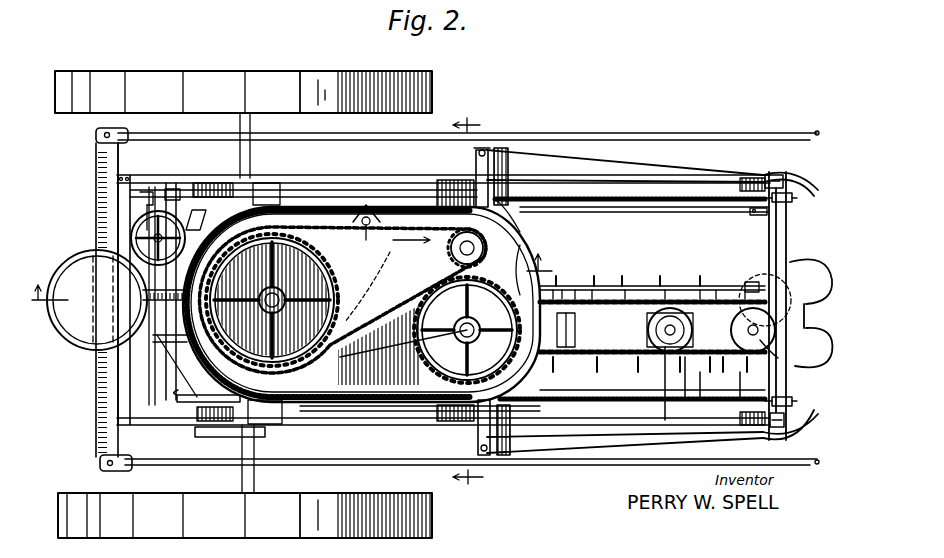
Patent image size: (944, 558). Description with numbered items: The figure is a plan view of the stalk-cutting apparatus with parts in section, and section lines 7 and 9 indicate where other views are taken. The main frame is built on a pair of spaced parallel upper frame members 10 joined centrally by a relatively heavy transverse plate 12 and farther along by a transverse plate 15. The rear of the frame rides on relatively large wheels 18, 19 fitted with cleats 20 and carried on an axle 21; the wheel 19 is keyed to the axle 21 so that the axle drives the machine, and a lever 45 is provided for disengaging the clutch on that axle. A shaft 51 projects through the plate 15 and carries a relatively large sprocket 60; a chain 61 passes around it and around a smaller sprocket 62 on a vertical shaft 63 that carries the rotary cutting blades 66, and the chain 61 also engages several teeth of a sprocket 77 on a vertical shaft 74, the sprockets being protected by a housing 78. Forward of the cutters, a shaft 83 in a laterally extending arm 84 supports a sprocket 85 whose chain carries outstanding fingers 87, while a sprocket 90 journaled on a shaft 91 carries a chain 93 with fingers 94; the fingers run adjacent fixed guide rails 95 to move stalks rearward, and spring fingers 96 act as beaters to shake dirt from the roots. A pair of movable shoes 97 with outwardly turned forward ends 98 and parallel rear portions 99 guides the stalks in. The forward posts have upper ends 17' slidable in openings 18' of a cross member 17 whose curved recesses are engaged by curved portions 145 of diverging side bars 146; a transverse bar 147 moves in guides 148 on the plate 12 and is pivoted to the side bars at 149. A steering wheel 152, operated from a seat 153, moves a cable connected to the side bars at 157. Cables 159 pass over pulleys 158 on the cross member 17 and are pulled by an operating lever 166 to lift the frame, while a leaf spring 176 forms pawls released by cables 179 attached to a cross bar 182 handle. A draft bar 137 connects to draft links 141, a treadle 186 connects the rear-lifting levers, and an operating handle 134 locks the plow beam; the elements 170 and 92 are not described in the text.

The wheel 18 is at (243, 81).
The wheel 19 is at (215, 528).
The cleats 20 is at (316, 75).
The axle 21 is at (238, 118).
The draft links 141 is at (650, 123).
The treadle 186 is at (118, 194).
The draft bar 137 is at (100, 222).
The seat 153 is at (77, 262).
The operating handle 134 is at (157, 330).
The section line 7 is at (292, 275).
The section line 9 is at (468, 306).
The transverse plate 15 is at (265, 186).
The cross bar 182 is at (142, 193).
The cable 179 is at (172, 197).
The steering wheel 152 is at (185, 258).
The lever 45 is at (170, 291).
The bar 170 is at (180, 401).
The operating lever 166 is at (208, 436).
The upper frame members 10 is at (350, 188).
The sprocket 60 is at (333, 277).
The housing 78 is at (529, 380).
The shaft 51 is at (278, 290).
The chain 61 is at (378, 318).
The vertical shaft 63 is at (456, 250).
The vertical shaft 74 is at (412, 340).
The sprocket 77 is at (417, 364).
The transverse bar 147 is at (473, 163).
The guides 148 is at (467, 188).
The transverse plate 12 is at (437, 197).
The pivotal connection 149 is at (481, 148).
The cable connection 157 is at (505, 150).
The side bars 146 is at (658, 170).
The upper ends of posts 17' is at (780, 300).
The openings 18' is at (741, 284).
The curved portions 145 is at (774, 175).
The cross member 17 is at (749, 306).
The pulleys 158 is at (789, 203).
The leaf spring 176 is at (766, 222).
The outwardly turned forward ends 98 is at (811, 265).
The shoes 97 is at (808, 292).
The rear portions of shoes 99 is at (750, 284).
The link 92 is at (777, 362).
The cable 159 is at (628, 206).
The fingers 87 is at (700, 299).
The fingers 94 is at (620, 299).
The guide rails 95 is at (646, 299).
The spring fingers 96 is at (562, 290).
The sprocket 62 is at (521, 233).
The rotary cutting blades 66 is at (527, 247).
The shaft 83 is at (648, 328).
The sprocket 85 is at (647, 340).
The shaft 91 is at (745, 325).
The arm 84 is at (668, 382).
The chain 93 is at (699, 385).
The sprocket 90 is at (739, 385).